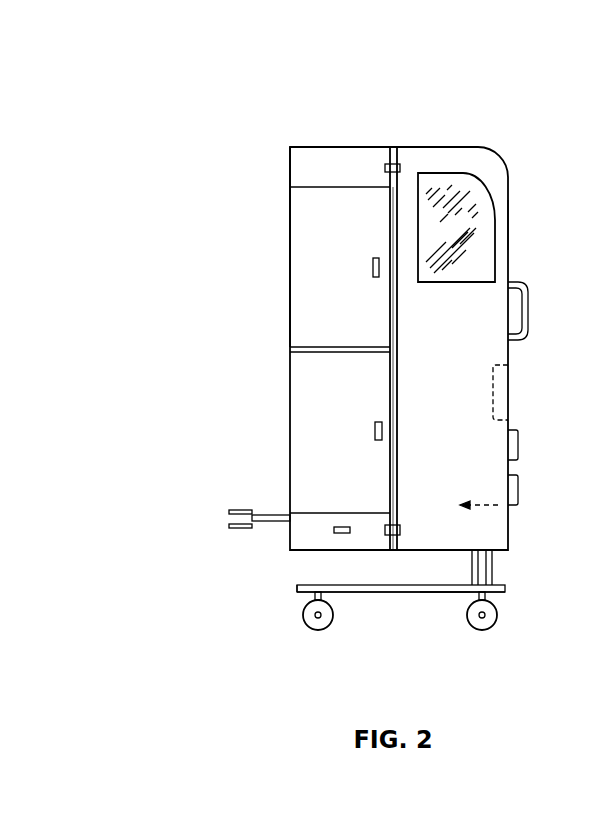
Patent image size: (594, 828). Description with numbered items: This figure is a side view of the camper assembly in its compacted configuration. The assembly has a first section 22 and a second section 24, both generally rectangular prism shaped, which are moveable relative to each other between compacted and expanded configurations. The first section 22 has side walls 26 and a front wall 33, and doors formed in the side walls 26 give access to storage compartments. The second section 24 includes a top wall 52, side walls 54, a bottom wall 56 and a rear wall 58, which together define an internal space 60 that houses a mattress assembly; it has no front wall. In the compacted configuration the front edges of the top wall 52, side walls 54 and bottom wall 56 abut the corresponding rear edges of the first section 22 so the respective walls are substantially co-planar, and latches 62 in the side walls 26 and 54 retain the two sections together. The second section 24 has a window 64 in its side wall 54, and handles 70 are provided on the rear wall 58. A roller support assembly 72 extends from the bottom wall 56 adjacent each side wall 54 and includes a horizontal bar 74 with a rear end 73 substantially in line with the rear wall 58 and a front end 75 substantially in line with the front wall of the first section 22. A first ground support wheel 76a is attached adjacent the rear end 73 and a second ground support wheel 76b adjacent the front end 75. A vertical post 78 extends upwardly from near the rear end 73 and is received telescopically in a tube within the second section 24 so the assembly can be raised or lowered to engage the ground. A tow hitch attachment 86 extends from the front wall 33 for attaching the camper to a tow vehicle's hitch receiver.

The first section 22 is at (317, 142).
The second section 24 is at (473, 142).
The side walls 26 is at (315, 328).
The front wall 33 is at (290, 216).
The top wall 52 is at (428, 146).
The side walls 54 is at (462, 347).
The bottom wall 56 is at (308, 552).
The rear wall 58 is at (510, 205).
The internal space 60 is at (500, 508).
The latches 62 is at (388, 165).
The window 64 is at (481, 190).
The handles 70 is at (530, 285).
The roller support assembly 72 is at (384, 610).
The rear end 73 is at (505, 592).
The horizontal bar 74 is at (445, 596).
The front end 75 is at (297, 588).
The first ground support wheel 76a is at (497, 622).
The second ground support wheel 76b is at (305, 628).
The vertical post 78 is at (487, 566).
The tow hitch attachment 86 is at (238, 510).